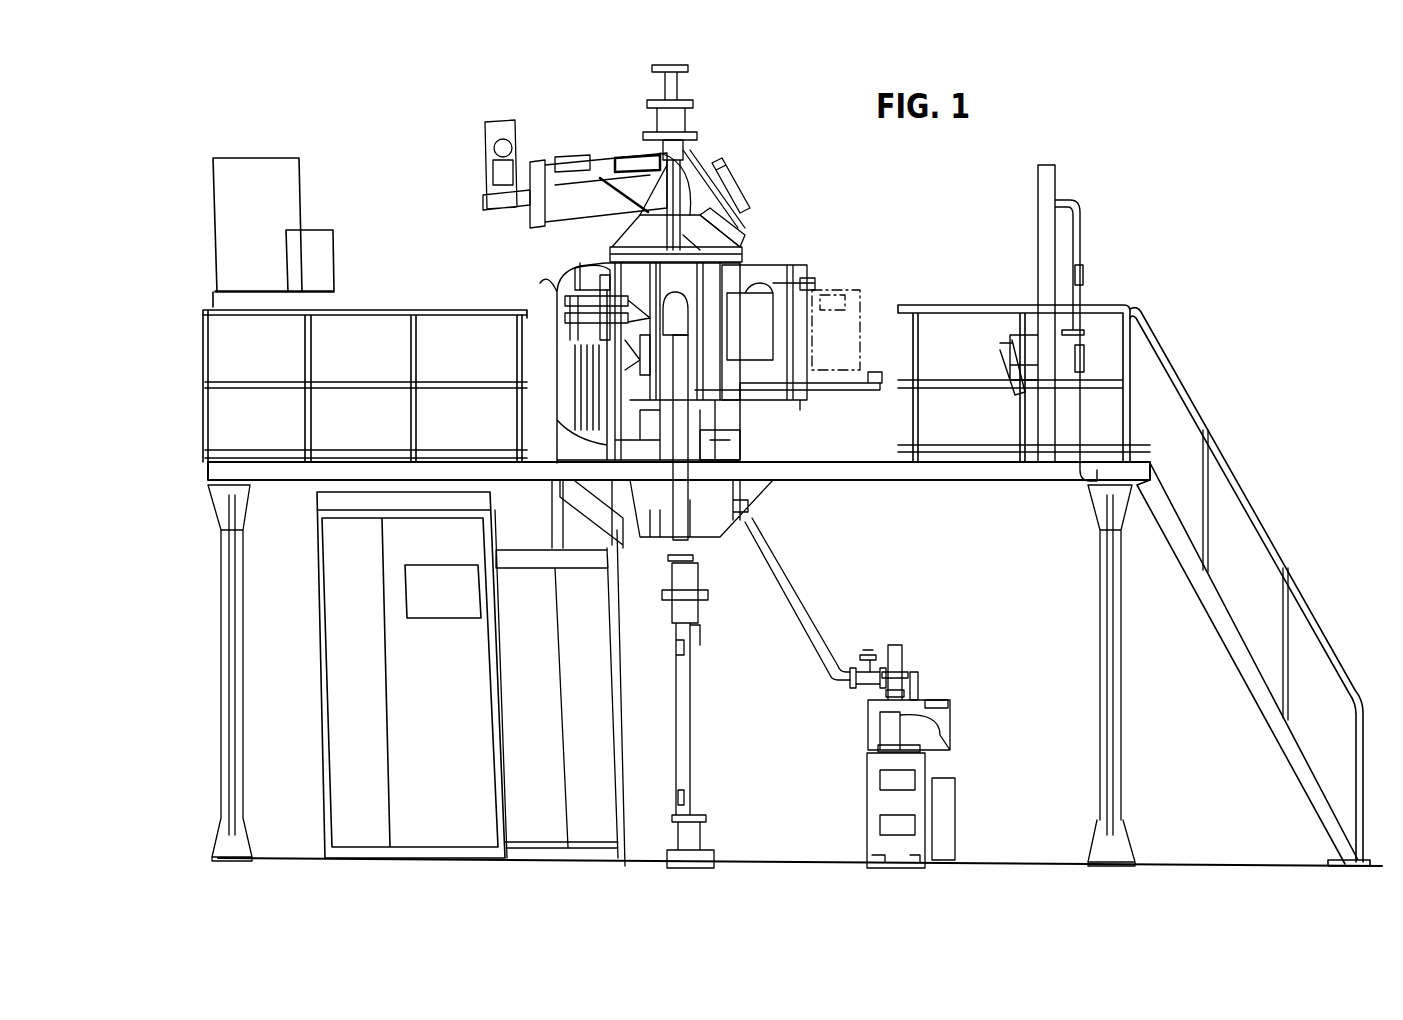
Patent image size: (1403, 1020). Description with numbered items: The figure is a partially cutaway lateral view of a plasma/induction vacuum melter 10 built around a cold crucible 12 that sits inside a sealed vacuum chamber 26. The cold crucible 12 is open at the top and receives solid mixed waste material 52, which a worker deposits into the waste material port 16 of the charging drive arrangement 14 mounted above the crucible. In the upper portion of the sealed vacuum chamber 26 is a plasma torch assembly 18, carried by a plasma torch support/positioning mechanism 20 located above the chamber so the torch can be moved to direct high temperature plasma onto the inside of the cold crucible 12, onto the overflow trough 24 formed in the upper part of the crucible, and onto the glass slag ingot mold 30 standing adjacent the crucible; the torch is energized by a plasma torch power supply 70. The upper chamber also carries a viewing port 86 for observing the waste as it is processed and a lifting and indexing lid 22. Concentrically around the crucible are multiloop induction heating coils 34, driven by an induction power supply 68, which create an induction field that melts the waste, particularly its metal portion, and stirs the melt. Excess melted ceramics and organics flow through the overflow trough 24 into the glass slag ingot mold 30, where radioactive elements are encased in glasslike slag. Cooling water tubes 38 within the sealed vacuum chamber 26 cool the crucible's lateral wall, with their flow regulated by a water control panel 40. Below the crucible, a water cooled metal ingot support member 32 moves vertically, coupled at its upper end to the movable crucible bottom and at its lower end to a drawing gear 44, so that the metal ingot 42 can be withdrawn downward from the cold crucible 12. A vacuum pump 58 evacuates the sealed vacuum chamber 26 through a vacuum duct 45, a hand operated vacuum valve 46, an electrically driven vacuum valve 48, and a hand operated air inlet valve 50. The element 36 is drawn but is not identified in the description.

The plasma/induction vacuum melter 10 is at (203, 435).
The cold crucible 12 is at (612, 246).
The charging drive arrangement 14 is at (528, 196).
The waste material port 16 is at (561, 157).
The plasma torch assembly 18 is at (685, 150).
The plasma torch support/positioning mechanism 20 is at (692, 122).
The lifting and indexing lid 22 is at (723, 222).
The overflow trough 24 is at (742, 237).
The sealed vacuum chamber 26 is at (602, 393).
The glass slag ingot mold 30 is at (780, 263).
The metal ingot support member 32 is at (660, 350).
The induction heating coils 34 is at (575, 270).
The bracket 36 is at (740, 445).
The cooling water tubes 38 is at (700, 350).
The water control panel 40 is at (1047, 250).
The metal ingot 42 is at (600, 383).
The drawing gear 44 is at (700, 782).
The vacuum duct 45 is at (800, 636).
The hand operated vacuum valve 46 is at (868, 650).
The electrically driven vacuum valve 48 is at (906, 668).
The hand operated air inlet valve 50 is at (935, 700).
The solid mixed waste material 52 is at (622, 162).
The vacuum pump 58 is at (937, 768).
The induction power supply 68 is at (314, 677).
The plasma torch power supply 70 is at (272, 217).
The viewing port 86 is at (728, 170).